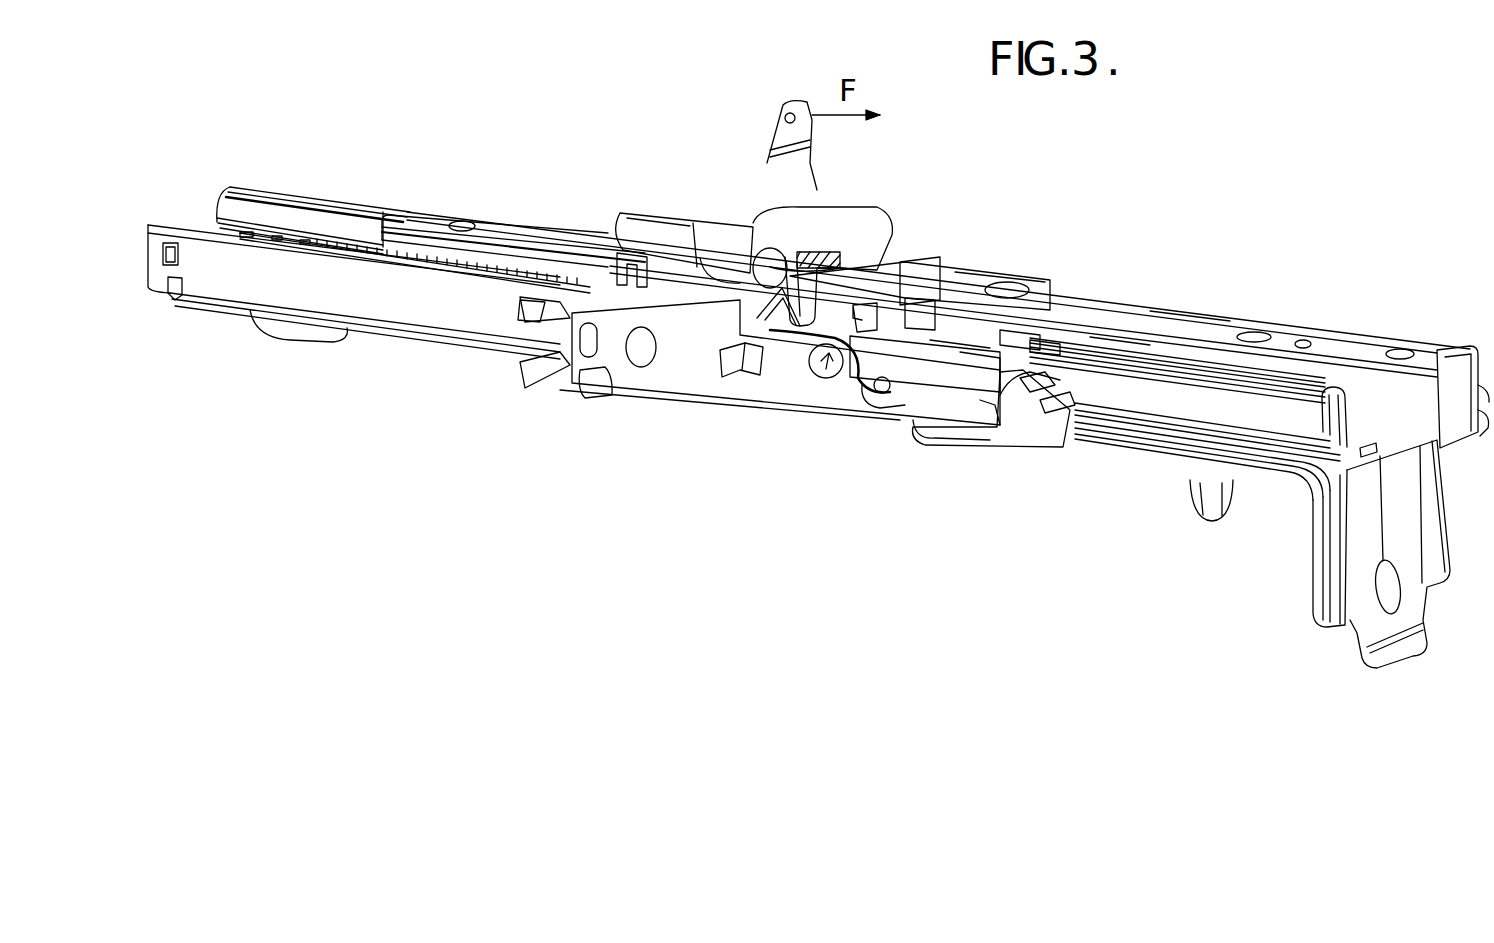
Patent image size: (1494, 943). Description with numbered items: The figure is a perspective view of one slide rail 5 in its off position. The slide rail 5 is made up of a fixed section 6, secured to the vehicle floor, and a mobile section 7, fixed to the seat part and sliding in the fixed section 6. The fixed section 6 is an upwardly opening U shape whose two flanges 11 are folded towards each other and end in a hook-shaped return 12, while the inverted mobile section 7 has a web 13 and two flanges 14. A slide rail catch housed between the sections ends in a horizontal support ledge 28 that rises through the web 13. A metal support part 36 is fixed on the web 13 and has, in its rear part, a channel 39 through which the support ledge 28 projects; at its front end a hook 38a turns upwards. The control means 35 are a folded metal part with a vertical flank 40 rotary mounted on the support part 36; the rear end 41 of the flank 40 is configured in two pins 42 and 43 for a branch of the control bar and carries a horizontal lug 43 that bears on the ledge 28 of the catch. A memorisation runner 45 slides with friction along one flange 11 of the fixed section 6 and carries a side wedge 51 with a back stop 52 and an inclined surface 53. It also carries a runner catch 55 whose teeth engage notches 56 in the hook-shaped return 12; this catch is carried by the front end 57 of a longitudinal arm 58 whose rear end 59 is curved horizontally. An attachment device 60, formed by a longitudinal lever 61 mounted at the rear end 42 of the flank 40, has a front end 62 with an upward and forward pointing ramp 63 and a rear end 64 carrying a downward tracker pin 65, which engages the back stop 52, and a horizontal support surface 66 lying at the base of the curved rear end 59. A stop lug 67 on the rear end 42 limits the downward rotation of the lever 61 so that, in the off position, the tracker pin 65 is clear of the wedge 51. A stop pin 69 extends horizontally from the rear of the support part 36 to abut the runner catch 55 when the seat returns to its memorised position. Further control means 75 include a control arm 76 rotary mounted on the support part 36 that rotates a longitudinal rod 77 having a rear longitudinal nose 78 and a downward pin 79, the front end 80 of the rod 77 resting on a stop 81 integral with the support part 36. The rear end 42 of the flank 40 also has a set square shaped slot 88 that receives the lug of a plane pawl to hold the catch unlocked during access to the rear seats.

The slide rail 5 is at (1120, 300).
The fixed section 6 is at (1318, 440).
The mobile section 7 is at (1466, 355).
The flanges 11 is at (1208, 412).
The hook-shaped return 12 is at (1345, 393).
The web 13 is at (1180, 327).
The flanges 14 is at (1468, 408).
The support ledge 28 is at (966, 261).
The control means 35 is at (673, 403).
The support part 36 is at (990, 273).
The hook 38a is at (598, 385).
The channel 39 is at (965, 282).
The vertical flank 40 is at (746, 335).
The rear end 41 is at (613, 337).
The pin 42 is at (527, 323).
The horizontal lug 43 is at (535, 380).
The memorisation runner 45 is at (1018, 452).
The side wedge 51 is at (935, 425).
The back stop 52 is at (995, 433).
The inclined surface 53 is at (985, 357).
The runner catch 55 is at (963, 350).
The notches 56 is at (467, 270).
The front end 57 is at (1023, 348).
The longitudinal arm 58 is at (1037, 343).
The rear end 59 is at (1110, 350).
The attachment device 60 is at (810, 350).
The longitudinal lever 61 is at (890, 353).
The front end 62 is at (802, 343).
The ramp 63 is at (753, 373).
The rear end 64 is at (990, 420).
The tracker pin 65 is at (1025, 383).
The support surface 66 is at (1040, 377).
The stop lug 67 is at (880, 390).
The stop pin 69 is at (932, 327).
The control means 75 is at (755, 208).
The control arm 76 is at (793, 153).
The longitudinal rod 77 is at (722, 247).
The longitudinal nose 78 is at (860, 220).
The pin 79 is at (873, 226).
The front end 80 is at (648, 232).
The stop 81 is at (622, 258).
The set square shaped slot 88 is at (837, 380).